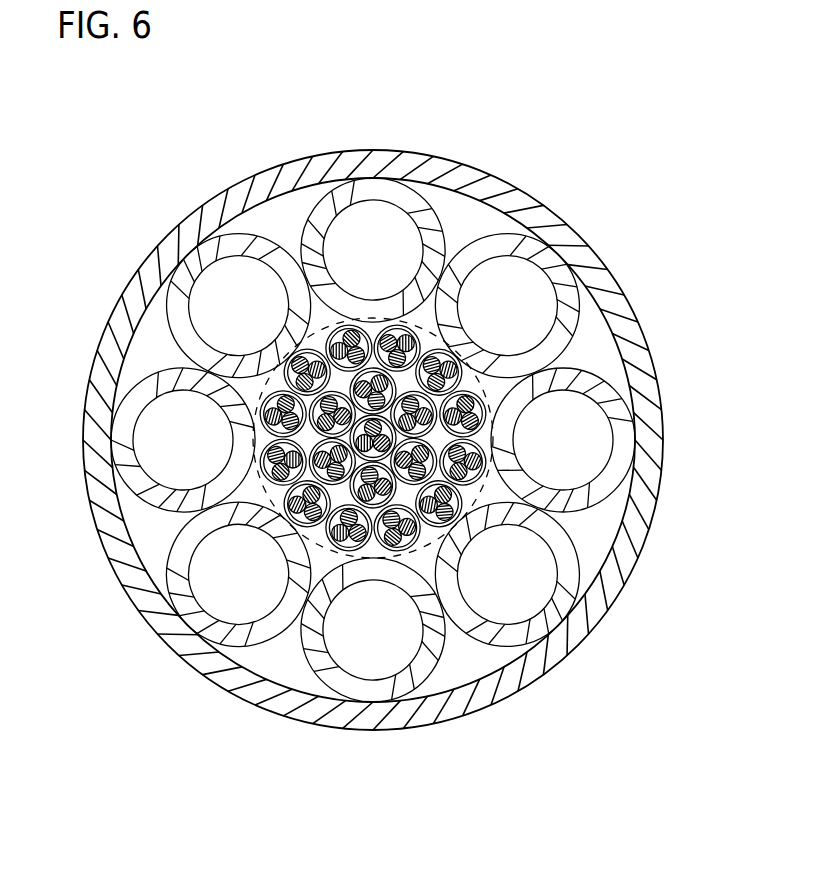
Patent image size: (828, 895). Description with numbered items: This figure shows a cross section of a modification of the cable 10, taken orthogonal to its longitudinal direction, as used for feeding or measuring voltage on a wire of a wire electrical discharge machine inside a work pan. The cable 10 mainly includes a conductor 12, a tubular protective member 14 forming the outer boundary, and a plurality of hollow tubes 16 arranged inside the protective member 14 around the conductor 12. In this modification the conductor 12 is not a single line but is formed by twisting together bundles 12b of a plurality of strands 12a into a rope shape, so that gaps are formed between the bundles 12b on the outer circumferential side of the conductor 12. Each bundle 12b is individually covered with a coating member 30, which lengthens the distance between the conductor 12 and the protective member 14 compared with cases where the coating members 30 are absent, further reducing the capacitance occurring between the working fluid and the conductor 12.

The cable 10 is at (145, 118).
The conductor 12 is at (418, 558).
The strand 12a is at (373, 442).
The bundle 12b is at (412, 347).
The protective member 14 is at (455, 170).
The hollow tube 16 is at (372, 190).
The coating member 30 is at (403, 336).